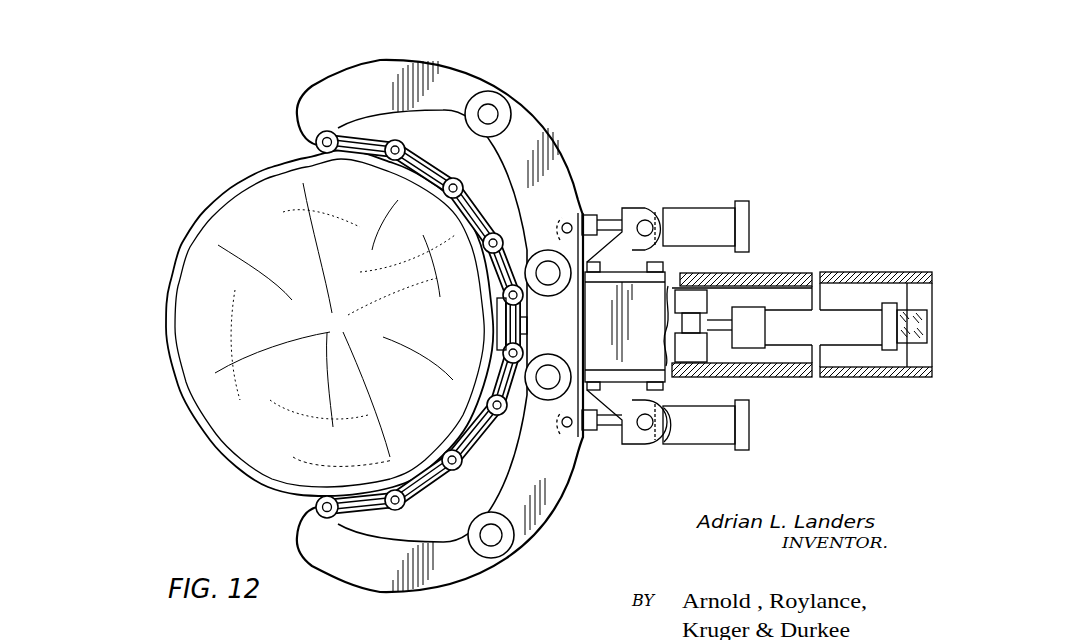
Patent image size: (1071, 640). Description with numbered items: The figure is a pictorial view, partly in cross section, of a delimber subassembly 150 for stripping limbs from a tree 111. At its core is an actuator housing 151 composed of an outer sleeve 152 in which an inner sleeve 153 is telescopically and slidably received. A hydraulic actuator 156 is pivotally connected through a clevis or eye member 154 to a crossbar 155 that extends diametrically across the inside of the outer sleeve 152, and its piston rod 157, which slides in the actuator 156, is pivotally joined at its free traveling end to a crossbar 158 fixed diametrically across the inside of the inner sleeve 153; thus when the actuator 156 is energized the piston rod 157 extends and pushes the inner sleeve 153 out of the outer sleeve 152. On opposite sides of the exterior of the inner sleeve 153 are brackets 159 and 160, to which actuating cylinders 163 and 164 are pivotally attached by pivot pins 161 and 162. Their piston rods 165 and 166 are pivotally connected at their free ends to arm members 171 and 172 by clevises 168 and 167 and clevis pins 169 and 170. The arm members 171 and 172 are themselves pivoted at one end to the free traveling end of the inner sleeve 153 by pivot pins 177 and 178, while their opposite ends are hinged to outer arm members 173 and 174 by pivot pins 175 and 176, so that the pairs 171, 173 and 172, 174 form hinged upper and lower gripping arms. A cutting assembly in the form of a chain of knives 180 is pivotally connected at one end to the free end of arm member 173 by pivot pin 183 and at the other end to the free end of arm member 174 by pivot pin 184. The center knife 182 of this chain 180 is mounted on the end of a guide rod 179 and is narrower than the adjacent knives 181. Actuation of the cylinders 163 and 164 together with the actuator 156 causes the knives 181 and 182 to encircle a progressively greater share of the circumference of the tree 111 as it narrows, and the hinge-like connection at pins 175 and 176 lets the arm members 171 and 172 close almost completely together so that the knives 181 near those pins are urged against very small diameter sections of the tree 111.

The tree 111 is at (217, 197).
The delimber subassembly 150 is at (287, 92).
The actuator housing 151 is at (876, 306).
The outer sleeve 152 is at (790, 272).
The inner sleeve 153 is at (838, 290).
The clevis or eye member 154 is at (905, 345).
The crossbar 155 is at (925, 345).
The hydraulic actuator 156 is at (793, 352).
The piston rod 157 is at (724, 318).
The crossbar 158 is at (680, 338).
The bracket 159 is at (670, 442).
The bracket 160 is at (675, 208).
The pivot pin 161 is at (645, 431).
The pivot pin 162 is at (645, 220).
The actuating cylinder 163 is at (722, 446).
The actuating cylinder 164 is at (741, 201).
The piston rod 165 is at (612, 428).
The piston rod 166 is at (608, 218).
The clevis 167 is at (584, 433).
The clevis 168 is at (586, 213).
The clevis pin 169 is at (566, 222).
The clevis pin 170 is at (567, 427).
The arm member 171 is at (535, 124).
The arm member 172 is at (548, 508).
The arm member 173 is at (448, 59).
The arm member 174 is at (396, 592).
The pivot pin 175 is at (490, 104).
The pivot pin 176 is at (500, 541).
The pivot pin 177 is at (548, 284).
The pivot pin 178 is at (547, 385).
The guide rod 179 is at (524, 326).
The chain 180 is at (387, 327).
The knives 181 is at (460, 225).
The center knife 182 is at (497, 322).
The pivot pin 183 is at (315, 140).
The pivot pin 184 is at (312, 507).